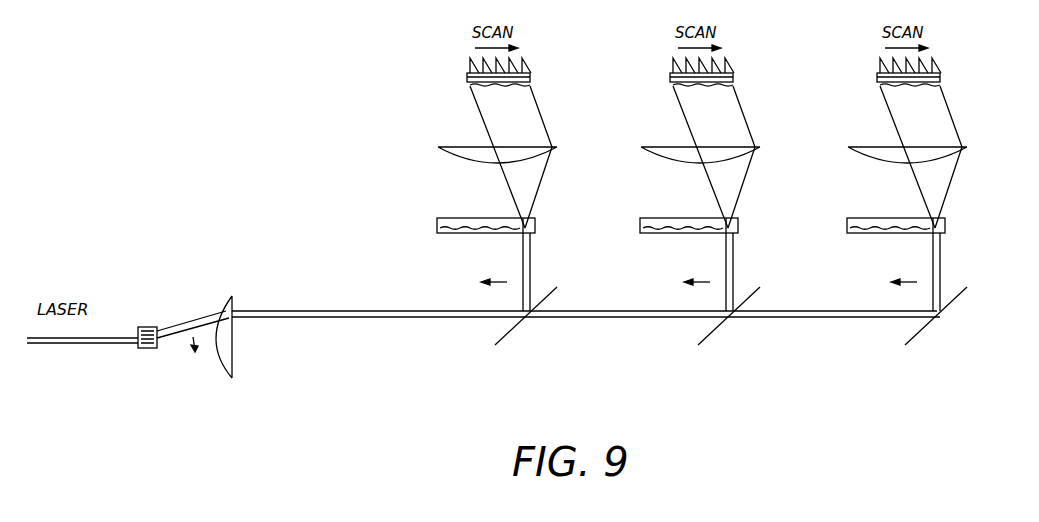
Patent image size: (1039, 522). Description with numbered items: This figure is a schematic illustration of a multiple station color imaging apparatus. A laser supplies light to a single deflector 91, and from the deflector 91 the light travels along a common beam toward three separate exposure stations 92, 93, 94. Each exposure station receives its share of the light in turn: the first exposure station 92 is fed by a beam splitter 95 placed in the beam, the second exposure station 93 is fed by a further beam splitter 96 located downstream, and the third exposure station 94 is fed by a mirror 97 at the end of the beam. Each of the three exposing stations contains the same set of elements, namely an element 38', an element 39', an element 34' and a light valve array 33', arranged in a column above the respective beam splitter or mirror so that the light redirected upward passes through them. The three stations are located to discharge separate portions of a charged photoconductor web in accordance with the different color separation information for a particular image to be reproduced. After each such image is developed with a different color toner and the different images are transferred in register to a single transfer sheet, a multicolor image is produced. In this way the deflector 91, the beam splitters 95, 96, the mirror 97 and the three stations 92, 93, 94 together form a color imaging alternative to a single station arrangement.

The deflector 91 is at (150, 327).
The exposure station 92 is at (445, 84).
The exposure station 93 is at (661, 91).
The exposure station 94 is at (858, 86).
The light valve array 33' is at (724, 58).
The exposing station element 34' is at (722, 82).
The exposing station element 38' is at (664, 229).
The exposing station element 39' is at (675, 156).
The beam splitter 95 is at (523, 322).
The beam splitter 96 is at (726, 322).
The mirror 97 is at (933, 322).